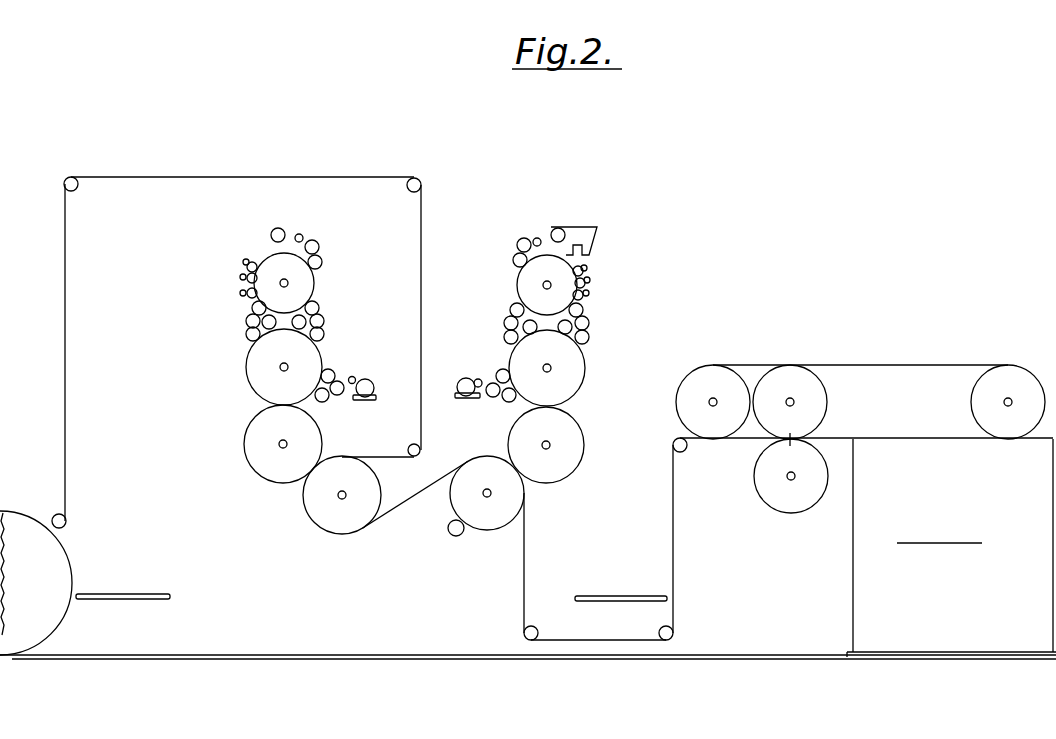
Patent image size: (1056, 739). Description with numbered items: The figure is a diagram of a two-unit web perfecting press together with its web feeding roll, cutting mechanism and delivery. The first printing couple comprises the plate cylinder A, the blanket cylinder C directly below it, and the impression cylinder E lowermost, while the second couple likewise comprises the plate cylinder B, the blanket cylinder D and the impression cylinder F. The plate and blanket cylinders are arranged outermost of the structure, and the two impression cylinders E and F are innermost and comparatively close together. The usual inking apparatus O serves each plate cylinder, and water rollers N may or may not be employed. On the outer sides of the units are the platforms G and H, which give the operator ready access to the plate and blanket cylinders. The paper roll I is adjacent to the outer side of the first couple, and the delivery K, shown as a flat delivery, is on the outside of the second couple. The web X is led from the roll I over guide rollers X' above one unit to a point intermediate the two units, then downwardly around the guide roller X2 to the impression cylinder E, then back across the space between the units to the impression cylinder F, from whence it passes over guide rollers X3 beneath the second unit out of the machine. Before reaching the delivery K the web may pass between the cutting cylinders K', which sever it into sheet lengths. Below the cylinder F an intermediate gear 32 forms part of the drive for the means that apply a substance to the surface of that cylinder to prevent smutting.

The web X is at (559, 408).
The guide rollers X' is at (251, 334).
The guide roller X2 is at (421, 452).
The guide rollers X3 is at (684, 452).
The paper roll I is at (15, 515).
The platform G is at (140, 593).
The inking apparatus O is at (321, 263).
The plate cylinder A is at (248, 371).
The water rollers N is at (363, 378).
The plate cylinder B is at (584, 368).
The blanket cylinder C is at (258, 465).
The blanket cylinder D is at (584, 441).
The impression cylinder E is at (352, 527).
The impression cylinder F is at (487, 531).
The intermediate gear 32 is at (452, 537).
The platform H is at (628, 594).
The cutting cylinders K' is at (860, 433).
The delivery K is at (528, 549).